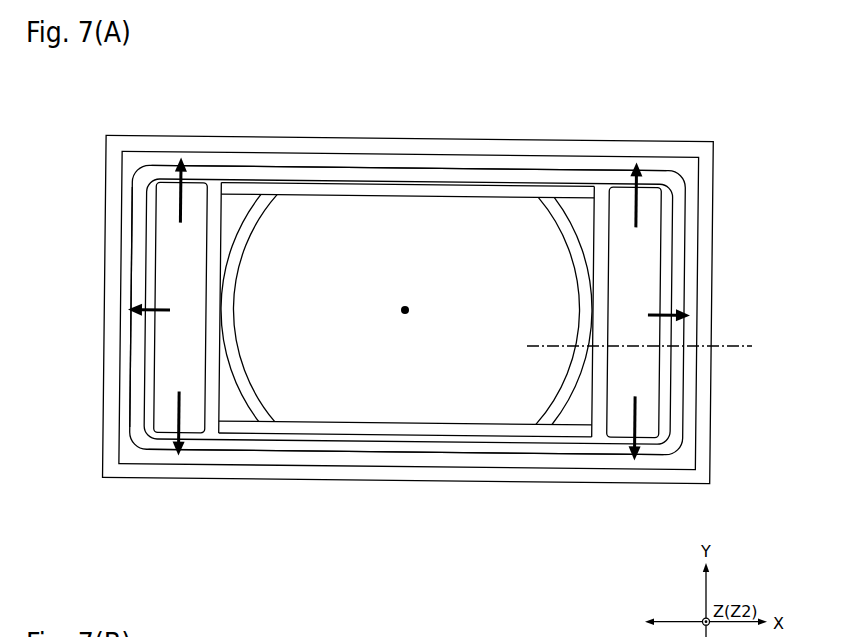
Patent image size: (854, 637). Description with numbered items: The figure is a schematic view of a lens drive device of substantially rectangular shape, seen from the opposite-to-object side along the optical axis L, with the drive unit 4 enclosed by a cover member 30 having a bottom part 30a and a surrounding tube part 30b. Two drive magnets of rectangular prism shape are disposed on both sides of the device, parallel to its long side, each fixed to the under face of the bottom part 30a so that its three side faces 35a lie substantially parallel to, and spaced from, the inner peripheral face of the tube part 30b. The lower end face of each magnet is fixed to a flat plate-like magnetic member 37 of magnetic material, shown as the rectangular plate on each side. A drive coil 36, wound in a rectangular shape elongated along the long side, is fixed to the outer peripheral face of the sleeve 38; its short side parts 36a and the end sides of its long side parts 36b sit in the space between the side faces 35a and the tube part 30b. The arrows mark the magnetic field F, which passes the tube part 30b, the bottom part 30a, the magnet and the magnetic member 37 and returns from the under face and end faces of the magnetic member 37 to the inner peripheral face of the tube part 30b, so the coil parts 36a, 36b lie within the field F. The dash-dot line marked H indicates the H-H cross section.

The lens unit housing 4 is at (685, 170).
The cover member 30 is at (392, 138).
The bottom part 30a is at (465, 164).
The tube part 30b is at (407, 310).
The side faces 35a is at (167, 181).
The drive coil 36 is at (685, 214).
The short side parts 36a is at (130, 373).
The long side parts 36b is at (330, 166).
The magnetic member 37 is at (192, 281).
The sleeve 38 is at (556, 182).
The magnetic field F is at (181, 171).
The optical axis L is at (405, 308).
The H-H cross section H is at (553, 347).